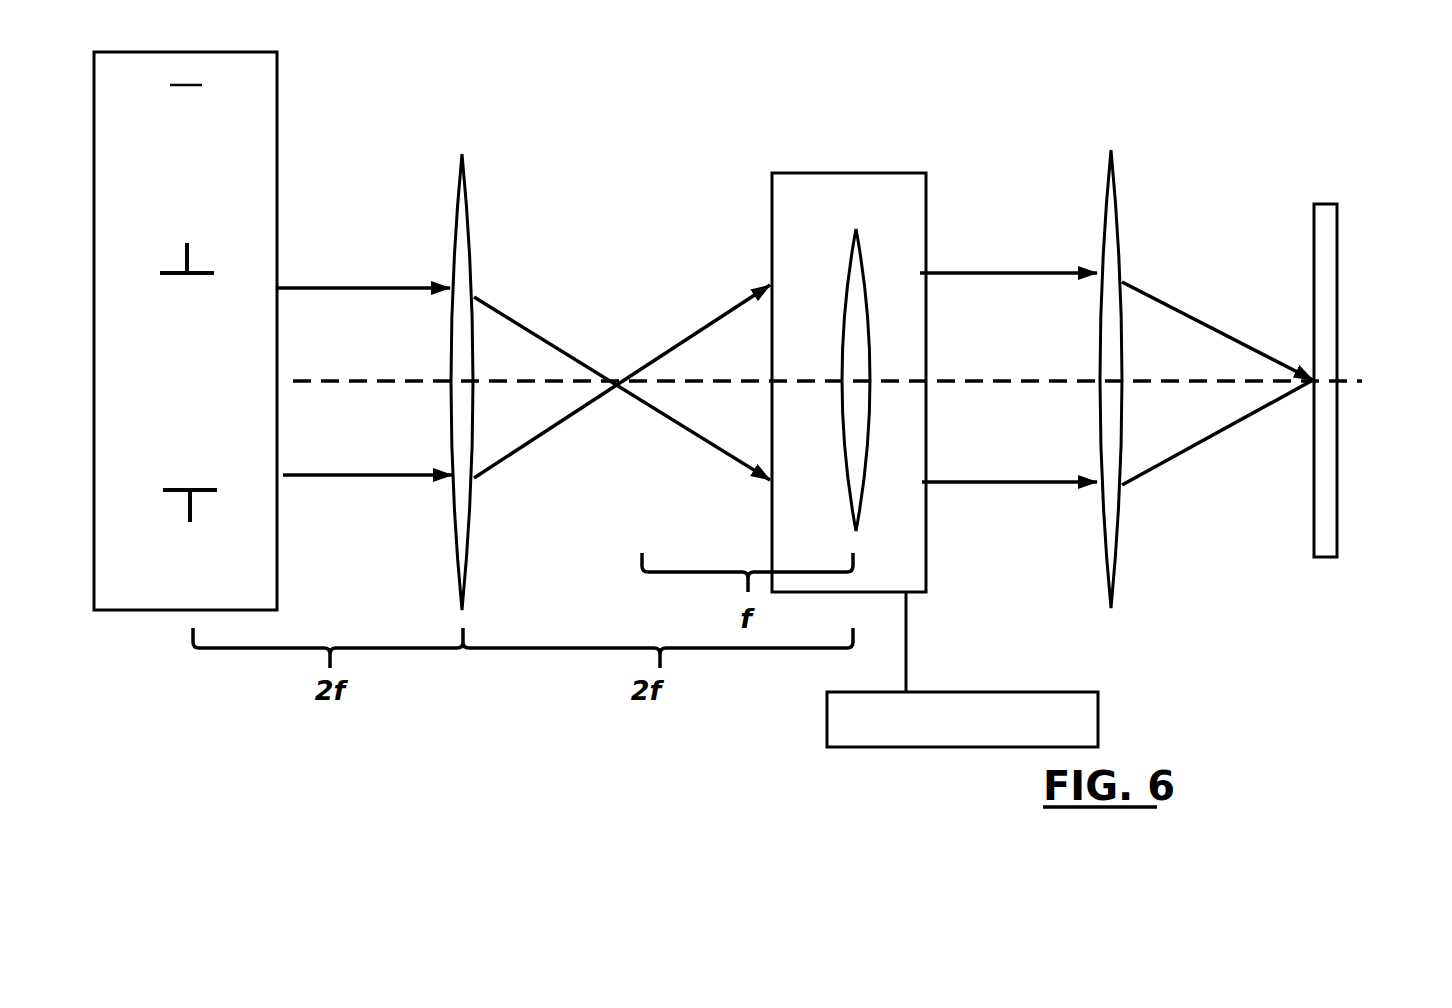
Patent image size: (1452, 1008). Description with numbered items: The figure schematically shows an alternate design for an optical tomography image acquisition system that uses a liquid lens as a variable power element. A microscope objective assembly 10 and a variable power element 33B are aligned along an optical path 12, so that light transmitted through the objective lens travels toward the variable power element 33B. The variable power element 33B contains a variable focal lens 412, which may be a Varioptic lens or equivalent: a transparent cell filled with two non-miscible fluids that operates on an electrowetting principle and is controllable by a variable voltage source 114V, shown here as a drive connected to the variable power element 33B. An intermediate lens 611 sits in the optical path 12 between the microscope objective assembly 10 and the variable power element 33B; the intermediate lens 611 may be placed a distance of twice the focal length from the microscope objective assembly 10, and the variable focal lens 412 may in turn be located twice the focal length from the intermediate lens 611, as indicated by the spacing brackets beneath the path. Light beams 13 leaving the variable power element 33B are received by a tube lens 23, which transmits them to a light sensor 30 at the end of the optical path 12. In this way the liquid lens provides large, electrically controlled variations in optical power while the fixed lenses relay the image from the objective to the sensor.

The microscope objective assembly 10 is at (185, 331).
The optical path 12 is at (352, 385).
The intermediate lens 611 is at (478, 209).
The variable power element 33B is at (850, 168).
The variable focal lens 412 is at (868, 266).
The light beams 13 is at (991, 497).
The tube lens 23 is at (1120, 183).
The light sensor 30 is at (1337, 546).
The variable voltage source 114V is at (998, 733).